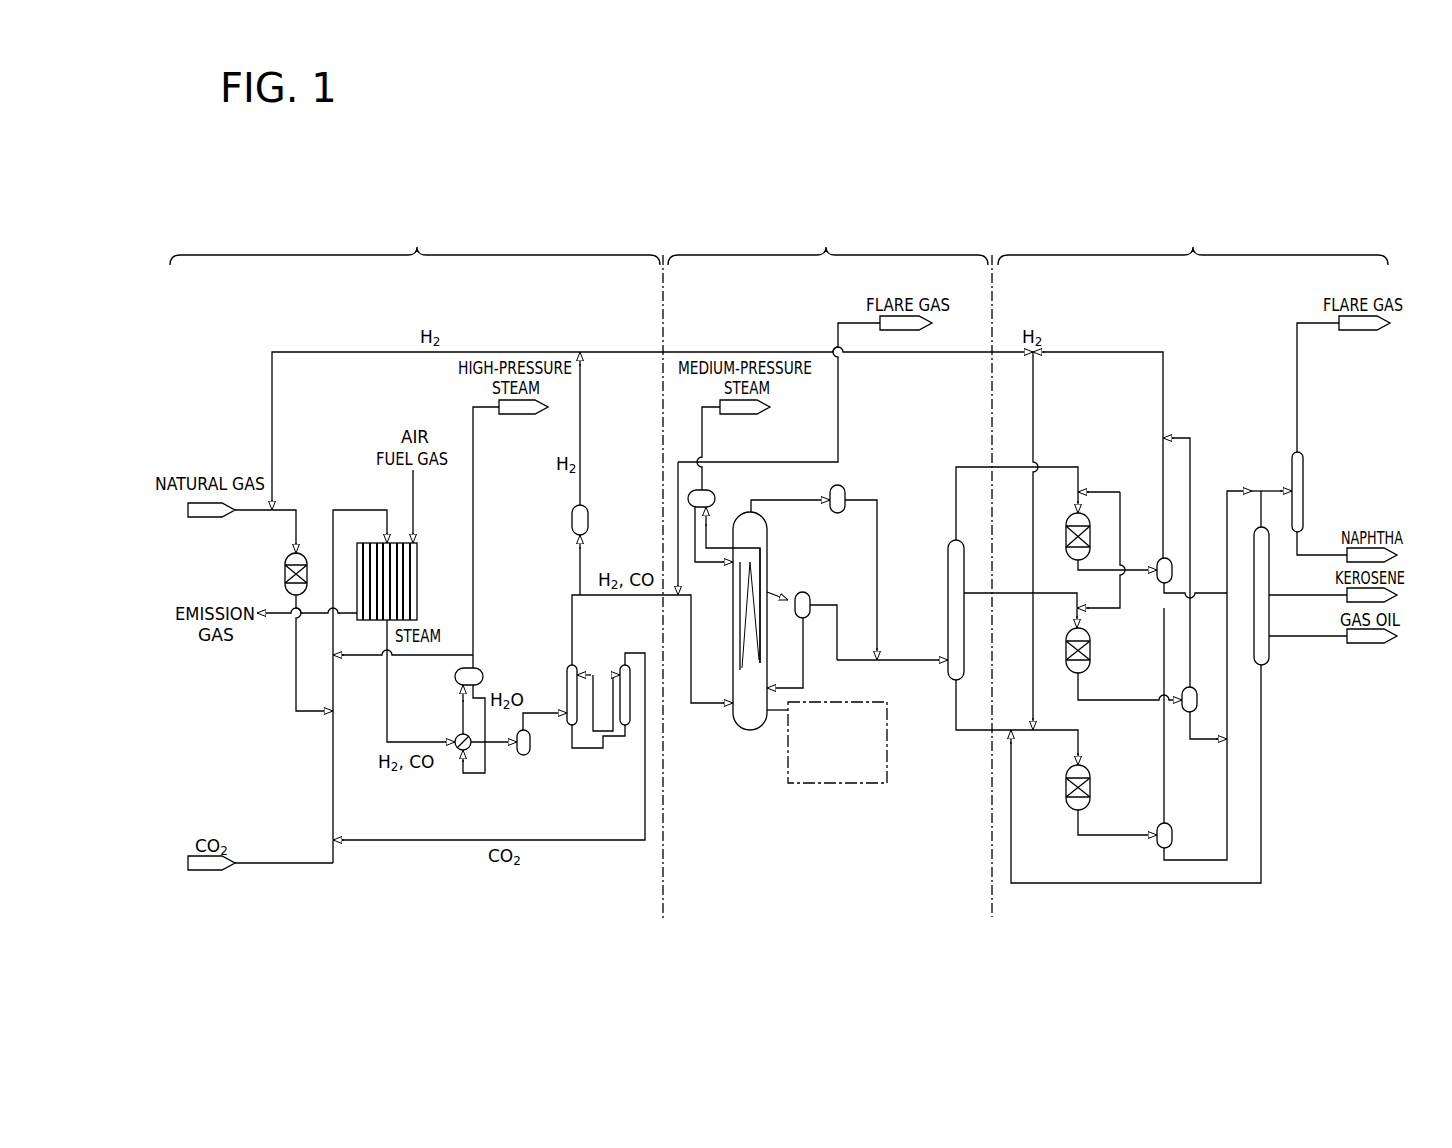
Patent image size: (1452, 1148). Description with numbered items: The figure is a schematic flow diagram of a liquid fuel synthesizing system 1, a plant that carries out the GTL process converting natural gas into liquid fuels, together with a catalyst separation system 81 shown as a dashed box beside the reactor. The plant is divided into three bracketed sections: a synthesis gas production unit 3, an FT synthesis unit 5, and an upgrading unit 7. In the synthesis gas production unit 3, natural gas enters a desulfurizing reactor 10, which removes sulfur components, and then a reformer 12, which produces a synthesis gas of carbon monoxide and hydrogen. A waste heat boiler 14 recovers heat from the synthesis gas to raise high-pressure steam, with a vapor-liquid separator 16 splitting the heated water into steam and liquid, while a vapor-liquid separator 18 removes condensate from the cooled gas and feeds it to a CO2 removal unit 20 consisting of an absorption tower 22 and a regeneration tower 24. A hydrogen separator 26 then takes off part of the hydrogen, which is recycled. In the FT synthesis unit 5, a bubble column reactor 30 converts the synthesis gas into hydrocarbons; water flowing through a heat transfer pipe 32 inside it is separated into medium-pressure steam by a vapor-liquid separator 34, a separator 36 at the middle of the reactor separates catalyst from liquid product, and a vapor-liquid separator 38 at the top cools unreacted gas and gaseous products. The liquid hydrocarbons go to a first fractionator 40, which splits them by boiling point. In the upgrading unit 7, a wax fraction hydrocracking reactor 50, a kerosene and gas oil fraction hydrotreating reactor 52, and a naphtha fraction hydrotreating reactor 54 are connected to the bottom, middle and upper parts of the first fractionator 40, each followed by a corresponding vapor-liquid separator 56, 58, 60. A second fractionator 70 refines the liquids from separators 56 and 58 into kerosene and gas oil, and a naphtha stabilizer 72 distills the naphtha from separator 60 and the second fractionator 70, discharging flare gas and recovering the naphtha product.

The liquid fuel synthesizing system 1 is at (993, 220).
The synthesis gas production unit 3 is at (415, 241).
The FT synthesis unit 5 is at (828, 241).
The upgrading unit 7 is at (1193, 241).
The desulfurizing reactor 10 is at (285, 572).
The reformer 12 is at (417, 565).
The waste heat boiler 14 is at (460, 752).
The vapor-liquid separator 16 is at (483, 675).
The vapor-liquid separator 18 is at (523, 757).
The CO2 removal unit 20 is at (594, 746).
The absorption tower 22 is at (572, 727).
The regeneration tower 24 is at (625, 727).
The hydrogen separator 26 is at (588, 514).
The bubble column reactor 30 is at (740, 727).
The heat transfer pipe 32 is at (768, 572).
The vapor-liquid separator 34 is at (715, 498).
The separator 36 is at (810, 600).
The vapor-liquid separator 38 is at (846, 495).
The first fractionator 40 is at (948, 560).
The wax fraction hydrocracking reactor 50 is at (1090, 787).
The kerosene and gas oil fraction hydrotreating reactor 52 is at (1090, 651).
The naphtha fraction hydrotreating reactor 54 is at (1090, 537).
The vapor-liquid separator 56 is at (1172, 836).
The vapor-liquid separator 58 is at (1197, 700).
The vapor-liquid separator 60 is at (1172, 565).
The second fractionator 70 is at (1269, 662).
The naphtha stabilizer 72 is at (1303, 490).
The catalyst separation system 81 is at (778, 772).